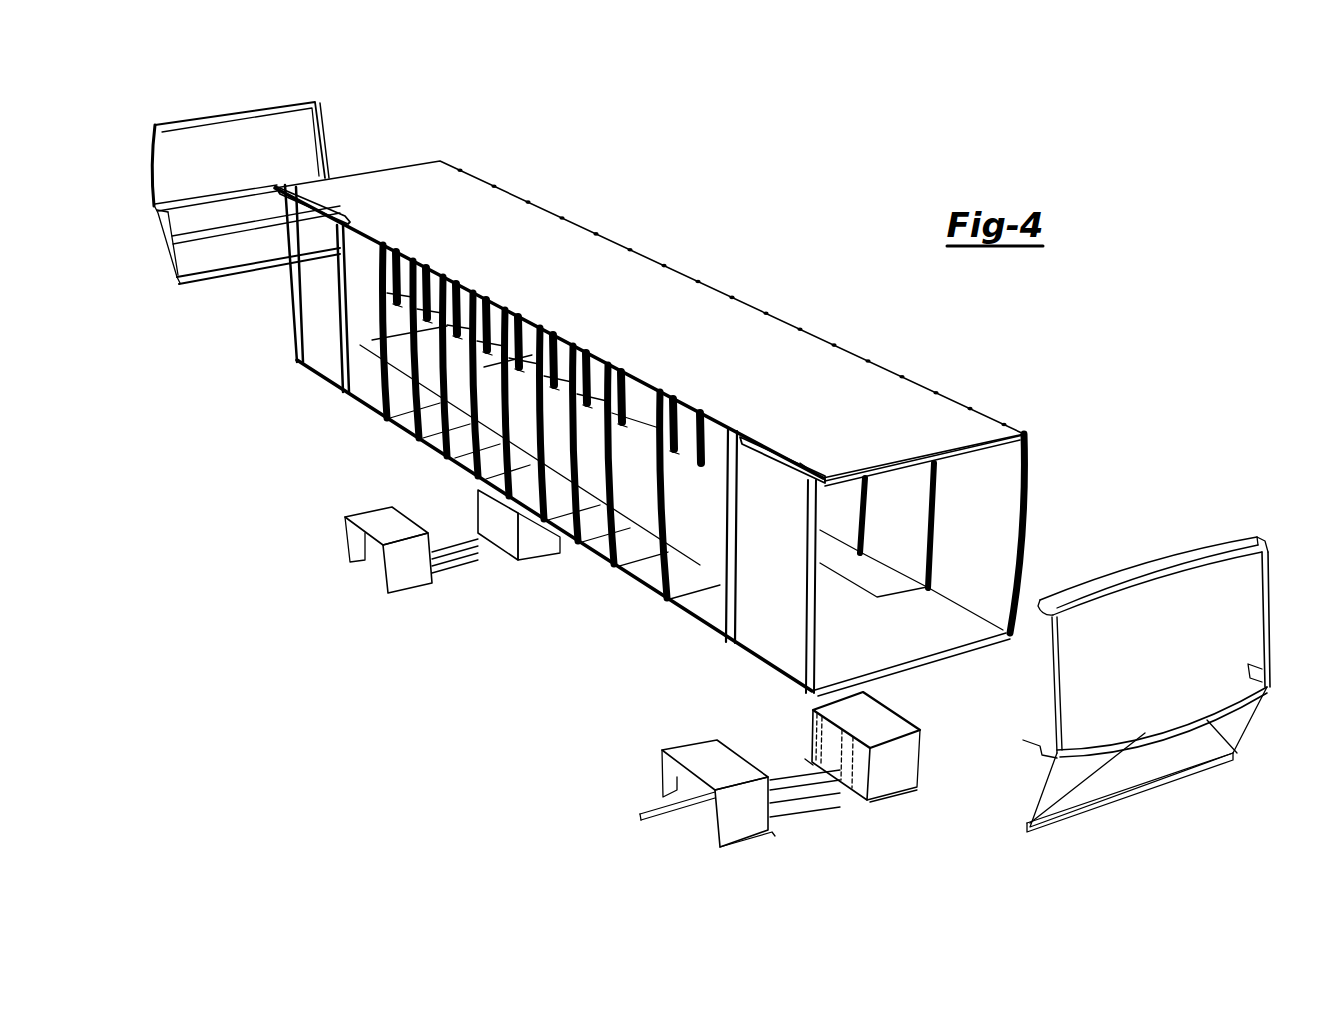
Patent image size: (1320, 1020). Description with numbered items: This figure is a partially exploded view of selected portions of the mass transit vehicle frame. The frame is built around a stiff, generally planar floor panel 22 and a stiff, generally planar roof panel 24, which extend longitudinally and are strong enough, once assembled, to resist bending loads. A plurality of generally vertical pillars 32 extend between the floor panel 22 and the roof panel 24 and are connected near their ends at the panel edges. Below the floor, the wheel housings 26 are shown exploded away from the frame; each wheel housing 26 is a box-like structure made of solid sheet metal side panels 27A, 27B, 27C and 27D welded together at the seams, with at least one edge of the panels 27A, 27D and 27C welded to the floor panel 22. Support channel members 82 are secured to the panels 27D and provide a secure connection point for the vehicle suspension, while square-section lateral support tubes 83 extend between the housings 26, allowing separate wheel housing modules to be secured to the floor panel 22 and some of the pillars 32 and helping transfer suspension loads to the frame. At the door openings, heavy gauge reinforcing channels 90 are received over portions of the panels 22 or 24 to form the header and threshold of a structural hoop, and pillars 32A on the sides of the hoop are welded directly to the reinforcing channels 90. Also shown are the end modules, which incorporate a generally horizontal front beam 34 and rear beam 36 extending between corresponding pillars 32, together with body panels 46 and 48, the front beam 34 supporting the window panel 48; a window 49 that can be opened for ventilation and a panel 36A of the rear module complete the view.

The floor panel 22 is at (650, 518).
The roof panel 24 is at (886, 418).
The wheel housing 26 is at (627, 672).
The side panel 27A is at (405, 570).
The side panel 27B is at (383, 520).
The side panel 27C is at (363, 563).
The side panel 27D is at (501, 535).
The pillar 32 is at (940, 530).
The pillar 32A is at (292, 362).
The front beam 34 is at (1148, 715).
The rear beam 36 is at (246, 178).
The upper panel 36A is at (184, 120).
The body panel 46 is at (1107, 770).
The body panel 48 is at (719, 555).
The window 49 is at (1172, 560).
The support channel member 82 is at (810, 744).
The lateral support tube 83 is at (442, 547).
The reinforcing channel 90 is at (318, 206).